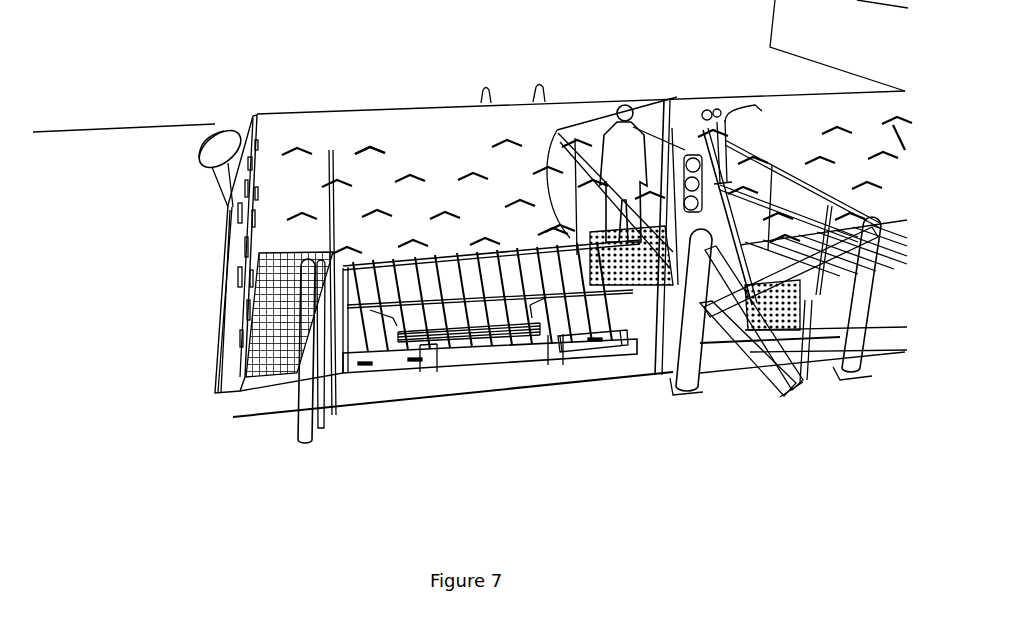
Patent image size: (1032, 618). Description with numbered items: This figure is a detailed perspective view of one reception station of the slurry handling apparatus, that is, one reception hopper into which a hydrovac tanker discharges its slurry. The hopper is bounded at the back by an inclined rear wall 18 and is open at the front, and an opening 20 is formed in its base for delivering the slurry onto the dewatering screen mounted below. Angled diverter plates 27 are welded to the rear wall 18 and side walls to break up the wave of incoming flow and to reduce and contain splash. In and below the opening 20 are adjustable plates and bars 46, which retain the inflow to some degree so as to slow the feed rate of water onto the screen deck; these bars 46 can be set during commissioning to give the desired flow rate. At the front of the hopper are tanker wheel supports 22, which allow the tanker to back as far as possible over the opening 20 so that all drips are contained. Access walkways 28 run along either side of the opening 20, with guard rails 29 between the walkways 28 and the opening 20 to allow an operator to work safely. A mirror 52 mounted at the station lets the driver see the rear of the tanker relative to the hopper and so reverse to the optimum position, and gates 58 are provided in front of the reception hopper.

The inclined rear wall 18 is at (449, 122).
The opening 20 is at (503, 303).
The tanker wheel supports 22 is at (600, 355).
The angled diverter plates 27 is at (372, 148).
The access walkways 28 is at (283, 357).
The guard rails 29 is at (331, 157).
The adjustable plates and bars 46 is at (477, 314).
The mirror 52 is at (219, 128).
The gates 58 is at (797, 383).